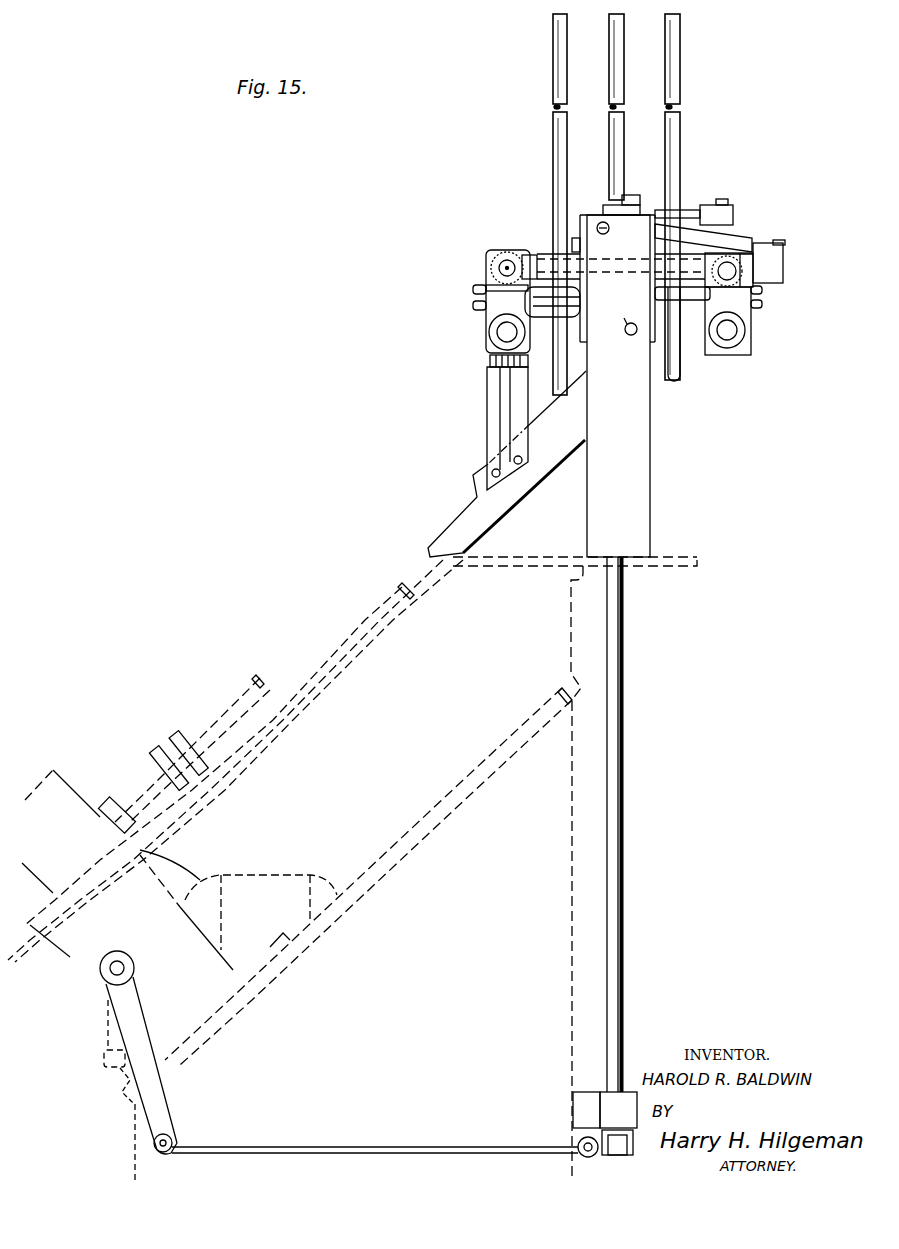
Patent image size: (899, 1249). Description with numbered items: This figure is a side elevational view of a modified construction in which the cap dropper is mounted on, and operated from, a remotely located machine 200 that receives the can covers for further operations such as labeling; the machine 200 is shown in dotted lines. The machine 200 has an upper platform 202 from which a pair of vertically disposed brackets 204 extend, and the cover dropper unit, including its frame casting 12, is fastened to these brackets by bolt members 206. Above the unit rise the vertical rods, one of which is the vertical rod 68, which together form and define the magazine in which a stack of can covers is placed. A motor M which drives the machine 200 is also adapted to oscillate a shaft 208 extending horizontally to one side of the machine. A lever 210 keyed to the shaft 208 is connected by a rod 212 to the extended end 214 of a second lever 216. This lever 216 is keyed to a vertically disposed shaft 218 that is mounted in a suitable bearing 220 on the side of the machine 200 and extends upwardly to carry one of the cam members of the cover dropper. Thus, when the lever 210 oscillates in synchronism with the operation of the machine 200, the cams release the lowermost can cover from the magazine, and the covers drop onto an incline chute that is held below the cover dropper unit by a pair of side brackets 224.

The vertical rod 68 is at (673, 174).
The frame casting 12 is at (722, 300).
The bolt members 206 is at (609, 228).
The vertically disposed brackets 204 is at (650, 513).
The side brackets 224 is at (487, 404).
The bearing 220 is at (493, 516).
The upper platform 202 is at (530, 566).
The machine 200 is at (325, 648).
The motor M is at (266, 878).
The shaft 208 is at (117, 968).
The lever 210 is at (160, 1102).
The rod 212 is at (400, 1146).
The vertically disposed shaft 218 is at (607, 952).
The lever 216 is at (633, 1152).
The extended end 214 is at (612, 1156).